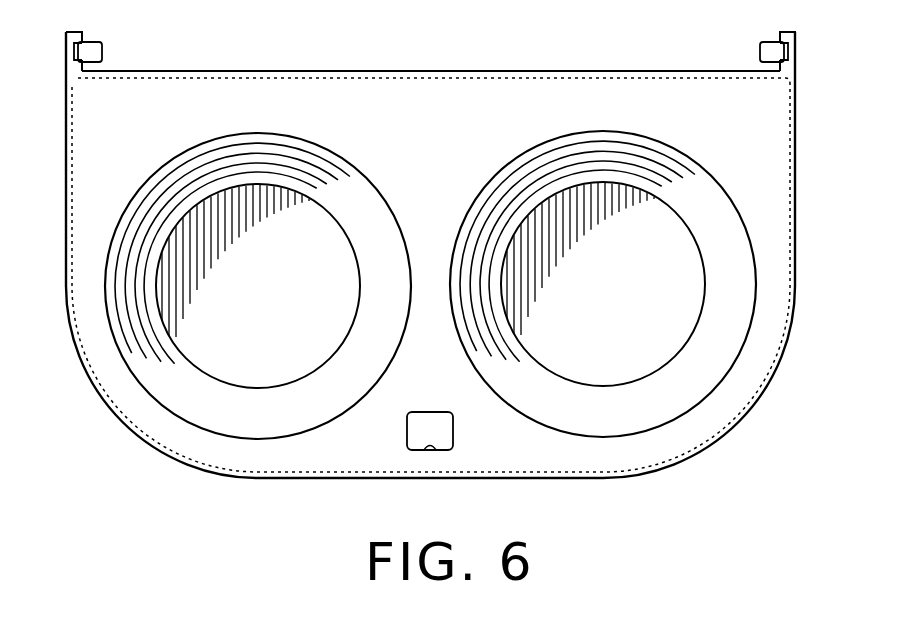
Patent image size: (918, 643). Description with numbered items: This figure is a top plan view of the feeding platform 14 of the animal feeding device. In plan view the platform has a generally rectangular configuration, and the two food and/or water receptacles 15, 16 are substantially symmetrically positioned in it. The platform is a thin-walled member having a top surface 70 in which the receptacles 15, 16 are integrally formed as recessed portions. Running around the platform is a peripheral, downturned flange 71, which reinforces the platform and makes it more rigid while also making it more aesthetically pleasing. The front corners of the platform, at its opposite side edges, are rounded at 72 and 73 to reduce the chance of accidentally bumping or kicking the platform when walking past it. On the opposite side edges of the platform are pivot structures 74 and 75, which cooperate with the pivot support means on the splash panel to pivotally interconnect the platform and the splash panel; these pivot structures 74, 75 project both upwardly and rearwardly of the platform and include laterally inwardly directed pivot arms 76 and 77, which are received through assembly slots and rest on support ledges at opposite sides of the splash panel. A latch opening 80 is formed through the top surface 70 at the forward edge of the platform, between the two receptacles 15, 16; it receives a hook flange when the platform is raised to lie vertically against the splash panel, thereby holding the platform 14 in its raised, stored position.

The feeding platform 14 is at (656, 482).
The food and/or water receptacle 15 is at (327, 163).
The food and/or water receptacle 16 is at (685, 163).
The top surface 70 is at (447, 142).
The peripheral downturned flange 71 is at (240, 470).
The rounded front corner 72 is at (130, 432).
The rounded front corner 73 is at (733, 425).
The pivot structure 74 is at (94, 40).
The pivot structure 75 is at (768, 33).
The pivot arm 76 is at (102, 53).
The pivot arm 77 is at (762, 50).
The latch opening 80 is at (443, 450).